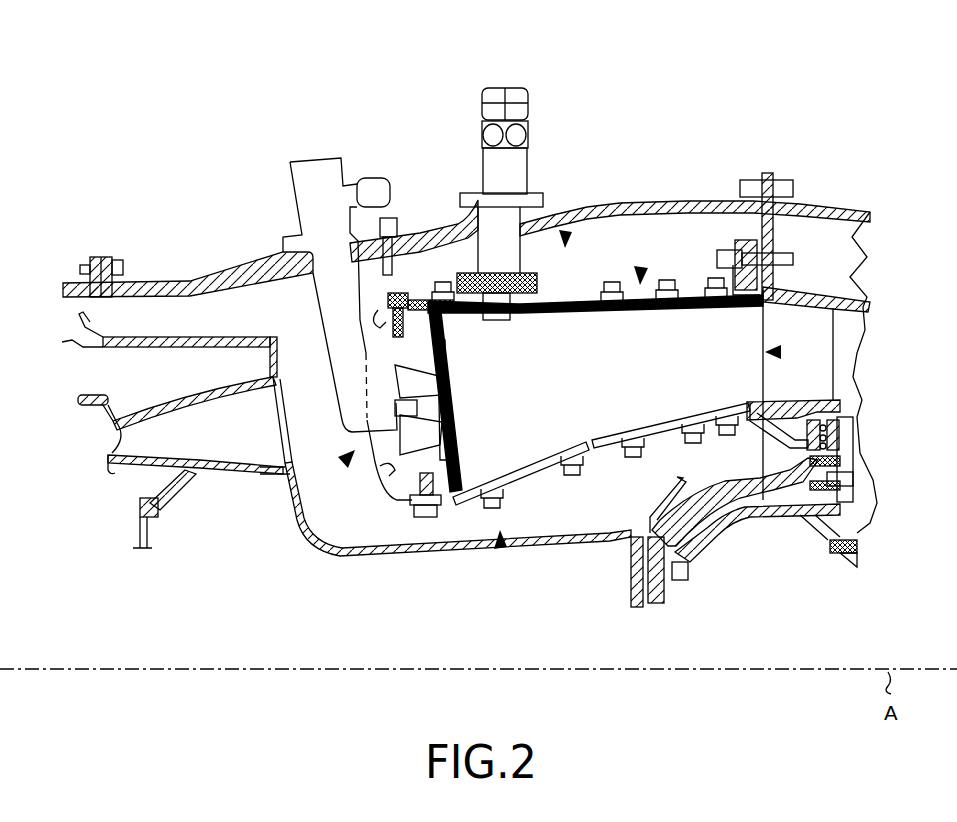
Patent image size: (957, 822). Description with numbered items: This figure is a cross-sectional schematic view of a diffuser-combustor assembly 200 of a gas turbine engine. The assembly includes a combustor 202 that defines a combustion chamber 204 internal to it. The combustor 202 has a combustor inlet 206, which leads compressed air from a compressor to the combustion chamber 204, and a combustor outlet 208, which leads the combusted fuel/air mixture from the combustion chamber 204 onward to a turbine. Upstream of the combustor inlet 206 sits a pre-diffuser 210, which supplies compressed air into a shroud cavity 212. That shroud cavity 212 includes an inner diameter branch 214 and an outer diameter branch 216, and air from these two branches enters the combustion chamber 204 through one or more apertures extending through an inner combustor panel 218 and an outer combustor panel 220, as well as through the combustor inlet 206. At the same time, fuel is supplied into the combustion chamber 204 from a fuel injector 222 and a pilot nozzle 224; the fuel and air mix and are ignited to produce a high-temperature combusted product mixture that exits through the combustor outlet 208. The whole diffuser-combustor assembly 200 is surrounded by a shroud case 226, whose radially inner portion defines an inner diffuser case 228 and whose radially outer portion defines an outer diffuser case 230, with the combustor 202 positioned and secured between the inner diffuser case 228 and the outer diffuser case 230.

The diffuser-combustor assembly 200 is at (195, 97).
The combustor 202 is at (641, 268).
The combustion chamber 204 is at (641, 370).
The combustor inlet 206 is at (345, 462).
The combustor outlet 208 is at (778, 352).
The pre-diffuser 210 is at (183, 396).
The shroud cavity 212 is at (331, 428).
The inner diameter branch 214 is at (499, 548).
The outer diameter branch 216 is at (566, 232).
The inner combustor panel 218 is at (608, 447).
The outer combustor panel 220 is at (587, 302).
The fuel injector 222 is at (294, 188).
The pilot nozzle 224 is at (443, 398).
The shroud case 226 is at (692, 198).
The inner diffuser case 228 is at (413, 562).
The outer diffuser case 230 is at (612, 202).